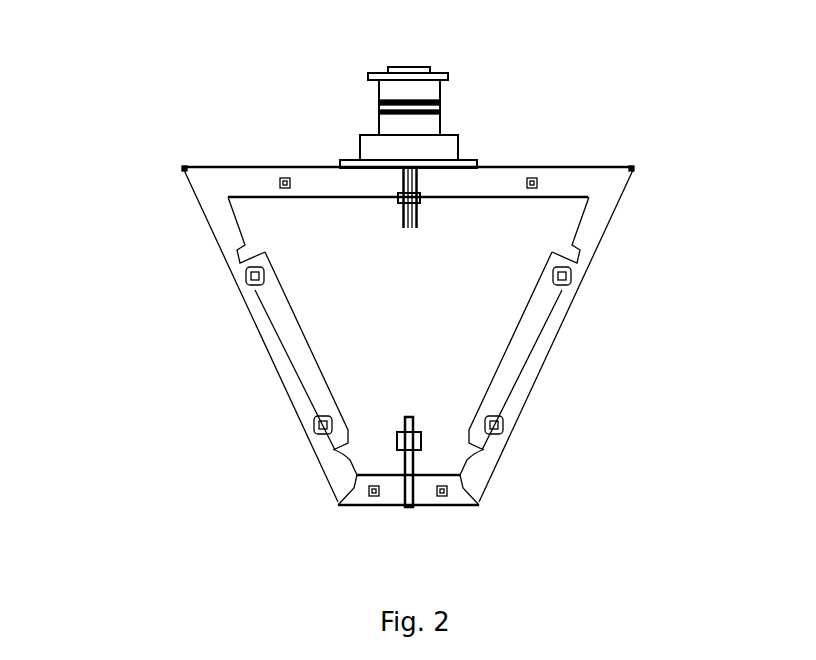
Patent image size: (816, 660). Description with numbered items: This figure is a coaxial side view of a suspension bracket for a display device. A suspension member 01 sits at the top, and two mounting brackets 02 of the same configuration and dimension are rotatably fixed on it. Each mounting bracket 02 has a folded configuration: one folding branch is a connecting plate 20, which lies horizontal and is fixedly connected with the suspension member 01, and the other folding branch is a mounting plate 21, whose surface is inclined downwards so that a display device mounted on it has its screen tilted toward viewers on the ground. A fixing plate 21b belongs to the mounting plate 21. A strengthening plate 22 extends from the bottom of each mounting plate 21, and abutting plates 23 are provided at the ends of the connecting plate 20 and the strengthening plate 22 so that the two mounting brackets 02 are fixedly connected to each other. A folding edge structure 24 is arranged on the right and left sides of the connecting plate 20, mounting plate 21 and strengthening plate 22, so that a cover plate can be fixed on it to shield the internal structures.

The suspension member 01 is at (448, 78).
The mounting bracket 02 is at (183, 170).
The connecting plate 20 is at (273, 167).
The mounting plate 21 is at (253, 322).
The fixing plate 21b is at (308, 382).
The strengthening plate 22 is at (477, 505).
The abutting plate 23 is at (385, 213).
The folding edge structure 24 is at (255, 183).